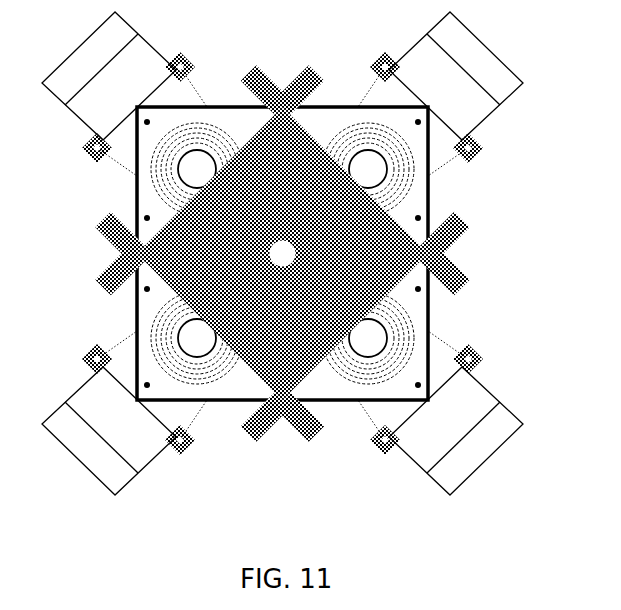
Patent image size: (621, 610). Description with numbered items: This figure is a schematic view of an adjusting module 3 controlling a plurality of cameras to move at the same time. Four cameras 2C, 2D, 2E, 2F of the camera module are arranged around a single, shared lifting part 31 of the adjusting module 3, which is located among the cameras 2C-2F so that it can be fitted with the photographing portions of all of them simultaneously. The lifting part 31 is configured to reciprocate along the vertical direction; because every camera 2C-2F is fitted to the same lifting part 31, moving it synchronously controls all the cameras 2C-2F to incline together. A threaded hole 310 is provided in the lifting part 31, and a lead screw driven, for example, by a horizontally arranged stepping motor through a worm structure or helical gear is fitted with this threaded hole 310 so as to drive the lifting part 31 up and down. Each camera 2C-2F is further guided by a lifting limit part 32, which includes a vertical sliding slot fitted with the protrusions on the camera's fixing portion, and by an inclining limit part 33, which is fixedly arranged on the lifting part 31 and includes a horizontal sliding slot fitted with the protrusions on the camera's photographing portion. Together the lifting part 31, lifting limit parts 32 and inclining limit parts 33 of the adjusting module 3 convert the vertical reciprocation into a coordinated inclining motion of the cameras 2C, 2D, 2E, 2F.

The camera 2C is at (140, 62).
The camera 2D is at (497, 87).
The camera 2E is at (449, 397).
The camera 2F is at (130, 447).
The adjusting module 3 is at (264, 256).
The lifting part 31 is at (405, 215).
The threaded hole 310 is at (190, 205).
The lifting limit part 32 is at (465, 343).
The inclining limit part 33 is at (308, 438).